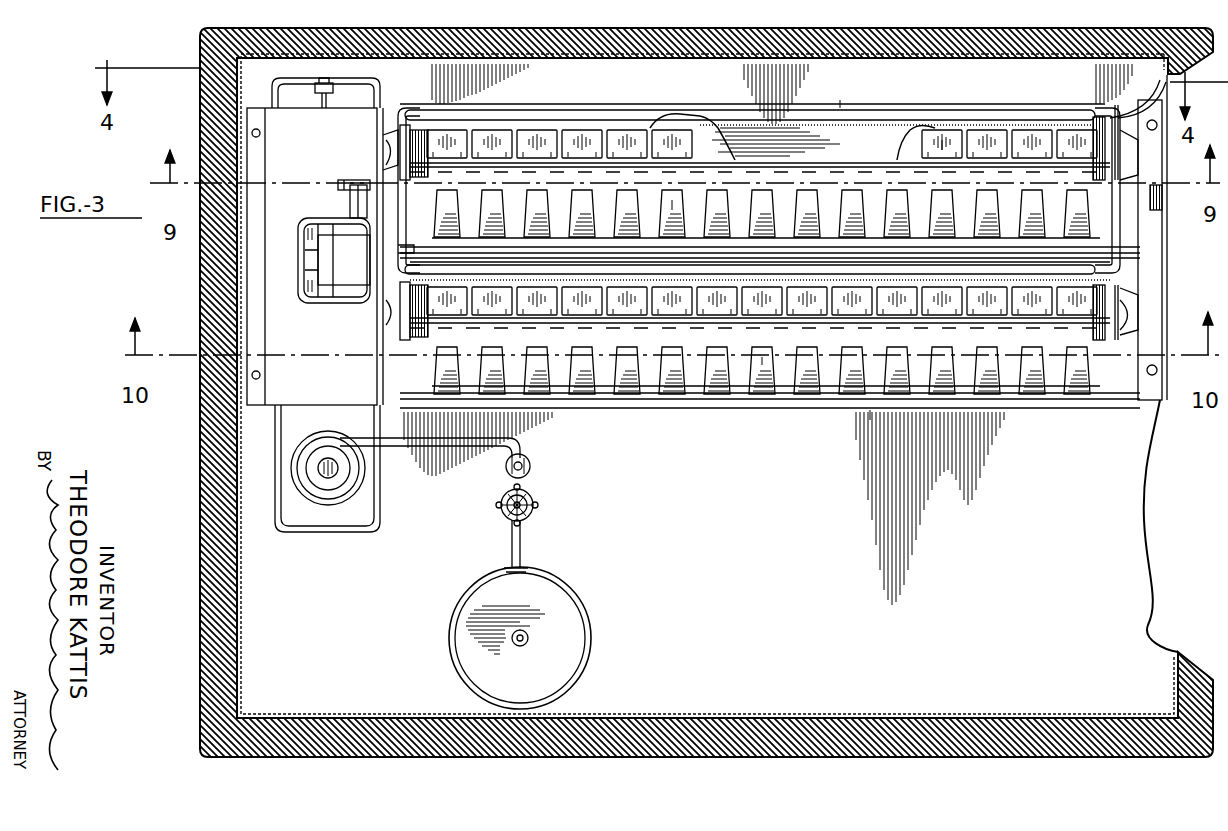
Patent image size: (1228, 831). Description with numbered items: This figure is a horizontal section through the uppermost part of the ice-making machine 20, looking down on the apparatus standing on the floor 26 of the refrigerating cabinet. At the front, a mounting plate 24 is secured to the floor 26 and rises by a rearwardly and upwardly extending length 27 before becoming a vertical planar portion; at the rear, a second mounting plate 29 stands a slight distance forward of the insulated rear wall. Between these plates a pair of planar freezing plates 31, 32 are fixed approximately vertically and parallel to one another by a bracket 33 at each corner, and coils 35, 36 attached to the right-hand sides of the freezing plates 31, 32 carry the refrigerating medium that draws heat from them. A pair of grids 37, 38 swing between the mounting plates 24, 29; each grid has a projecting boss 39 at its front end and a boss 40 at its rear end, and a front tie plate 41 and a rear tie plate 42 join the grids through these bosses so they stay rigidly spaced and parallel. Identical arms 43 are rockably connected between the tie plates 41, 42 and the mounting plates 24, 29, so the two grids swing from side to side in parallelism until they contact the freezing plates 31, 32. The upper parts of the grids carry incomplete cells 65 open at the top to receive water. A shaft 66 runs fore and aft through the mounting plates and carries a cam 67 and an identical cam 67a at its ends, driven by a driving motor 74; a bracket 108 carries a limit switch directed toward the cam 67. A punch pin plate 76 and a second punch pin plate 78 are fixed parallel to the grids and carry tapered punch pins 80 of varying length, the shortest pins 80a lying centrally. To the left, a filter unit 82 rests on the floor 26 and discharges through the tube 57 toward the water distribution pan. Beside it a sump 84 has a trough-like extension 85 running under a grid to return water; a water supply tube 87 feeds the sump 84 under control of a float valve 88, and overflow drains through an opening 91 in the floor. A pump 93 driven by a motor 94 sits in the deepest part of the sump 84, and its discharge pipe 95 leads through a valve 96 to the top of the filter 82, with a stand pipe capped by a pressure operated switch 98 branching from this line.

The machine 20 is at (690, 412).
The mounting plate 24 is at (376, 383).
The floor 26 is at (732, 99).
The rearwardly and upwardly extending length 27 is at (290, 400).
The second mounting plate 29 is at (1156, 402).
The freezing plate 31 is at (640, 276).
The freezing plate 32 is at (548, 106).
The bracket 33 is at (400, 107).
The coil 35 is at (912, 276).
The coil 36 is at (500, 112).
The grid 37 is at (706, 300).
The grid 38 is at (635, 122).
The projecting boss 39 is at (419, 132).
The projecting boss 40 is at (1106, 176).
The tie plate 41 is at (398, 146).
The tie plate 42 is at (1132, 294).
The arm 43 is at (395, 154).
The tube 57 is at (520, 646).
The incomplete cell 65 is at (950, 142).
The shaft 66 is at (555, 238).
The cam 67 is at (350, 197).
The cam 67a is at (1160, 205).
The driving motor 74 is at (326, 300).
The punch pin plate 76 is at (862, 238).
The second punch pin plate 78 is at (592, 390).
The punch pin 80 is at (453, 200).
The punch pin 80a is at (674, 203).
The filter unit 82 is at (565, 608).
The sump 84 is at (278, 96).
The trough-like extension 85 is at (905, 125).
The water supply tube 87 is at (334, 86).
The float valve 88 is at (323, 105).
The opening 91 is at (838, 108).
The pump 93 is at (340, 500).
The motor 94 is at (322, 480).
The discharge pipe 95 is at (408, 450).
The valve 96 is at (537, 505).
The pressure operated switch 98 is at (529, 462).
The bracket 108 is at (338, 184).